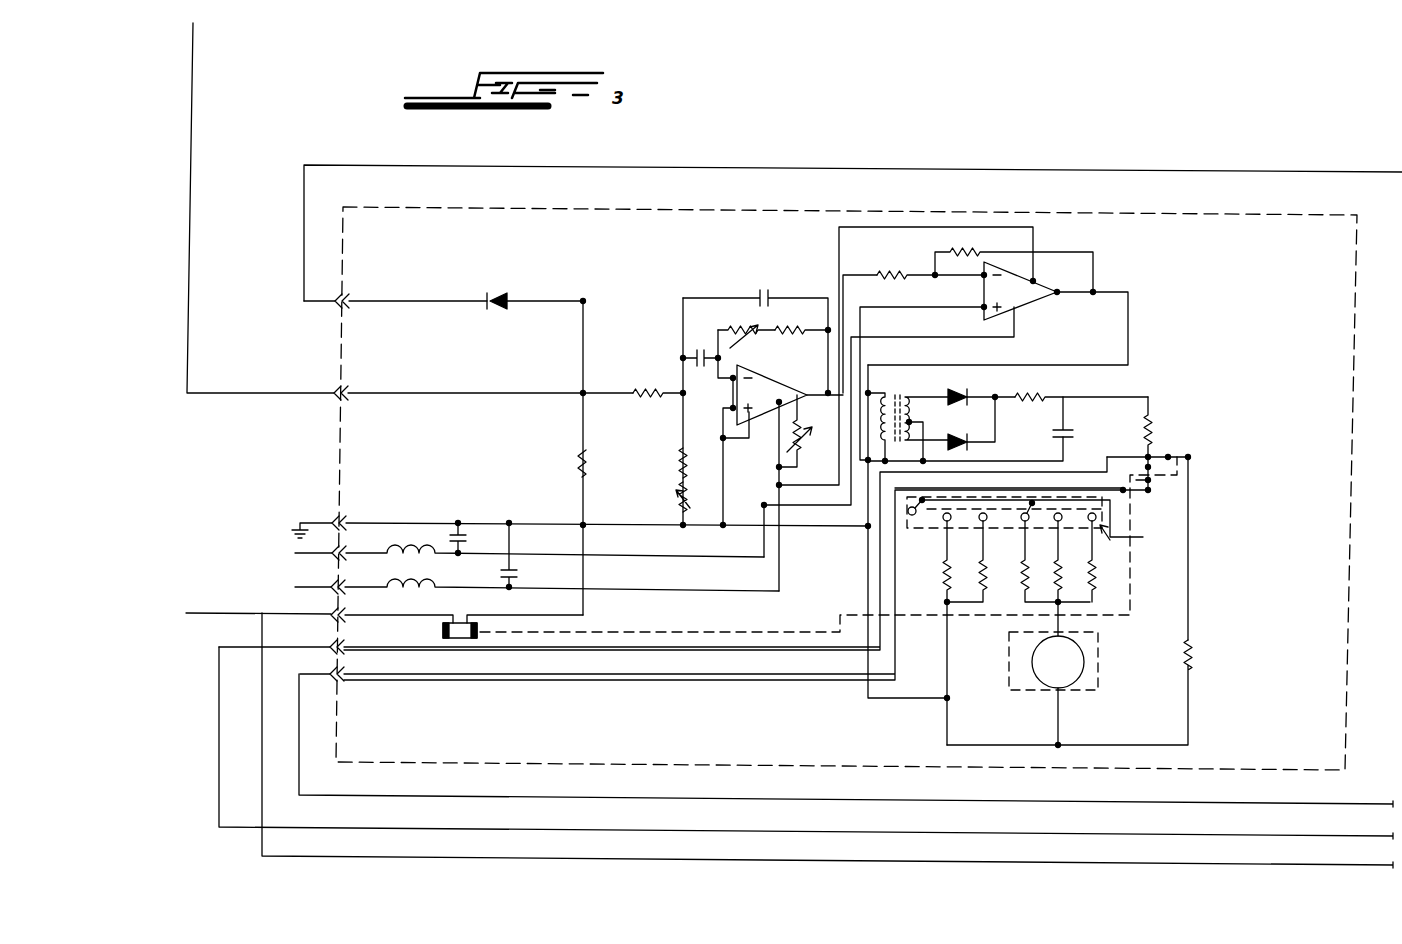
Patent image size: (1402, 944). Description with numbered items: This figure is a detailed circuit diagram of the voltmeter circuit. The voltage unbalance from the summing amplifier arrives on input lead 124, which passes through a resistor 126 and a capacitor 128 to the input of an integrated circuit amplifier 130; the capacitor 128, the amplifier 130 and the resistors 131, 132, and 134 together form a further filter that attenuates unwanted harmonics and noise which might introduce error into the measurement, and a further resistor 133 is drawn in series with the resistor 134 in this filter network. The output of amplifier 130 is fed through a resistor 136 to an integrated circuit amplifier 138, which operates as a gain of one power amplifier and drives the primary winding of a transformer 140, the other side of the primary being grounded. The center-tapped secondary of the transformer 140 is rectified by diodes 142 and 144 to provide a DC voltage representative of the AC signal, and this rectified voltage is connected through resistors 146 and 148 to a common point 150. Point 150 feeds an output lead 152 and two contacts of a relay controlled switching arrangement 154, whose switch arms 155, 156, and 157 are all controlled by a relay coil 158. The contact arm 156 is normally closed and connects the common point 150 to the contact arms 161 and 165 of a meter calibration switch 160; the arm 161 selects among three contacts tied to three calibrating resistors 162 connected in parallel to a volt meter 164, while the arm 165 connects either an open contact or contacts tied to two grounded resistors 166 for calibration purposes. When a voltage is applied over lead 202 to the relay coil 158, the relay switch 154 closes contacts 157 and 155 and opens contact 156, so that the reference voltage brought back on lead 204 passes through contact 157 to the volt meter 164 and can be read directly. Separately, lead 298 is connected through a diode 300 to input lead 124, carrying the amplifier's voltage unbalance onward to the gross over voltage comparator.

The lead 124 is at (191, 183).
The lead 298 is at (1160, 167).
The diode 300 is at (500, 297).
The resistor 126 is at (645, 390).
The capacitor 128 is at (731, 320).
The integrated circuit amplifier 130 is at (768, 293).
The resistor 131 is at (801, 320).
The resistor 132 is at (748, 340).
The resistor 133 is at (680, 455).
The resistor 134 is at (683, 490).
The resistor 136 is at (880, 274).
The integrated circuit amplifier 138 is at (1020, 291).
The transformer 140 is at (893, 397).
The diode 142 is at (966, 395).
The diode 144 is at (970, 442).
The resistor 146 is at (1040, 397).
The resistor 148 is at (1156, 430).
The common point 150 is at (1150, 457).
The output lead 152 is at (1066, 478).
The relay controlled switching arrangement 154 is at (1180, 500).
The switch arm 155 is at (1192, 457).
The contact arm 156 is at (1150, 479).
The switch arm 157 is at (1128, 485).
The relay coil 158 is at (443, 630).
The meter calibration switch 160 is at (1032, 503).
The contact arm 161 is at (1116, 542).
The calibrating resistors 162 is at (1095, 582).
The volt meter 164 is at (1085, 670).
The contact arm 165 is at (912, 516).
The resistors 166 is at (978, 580).
The lead 202 is at (372, 616).
The lead 204 is at (1005, 495).